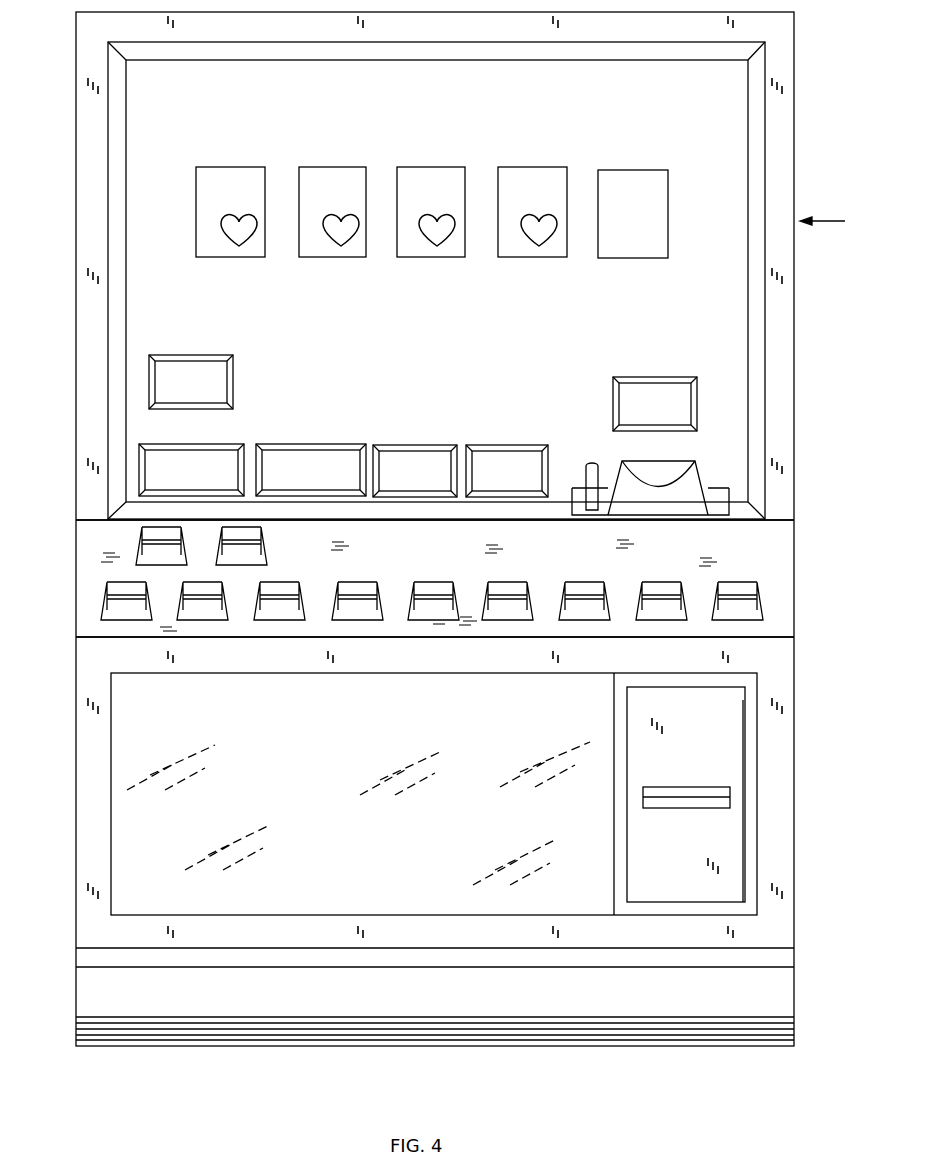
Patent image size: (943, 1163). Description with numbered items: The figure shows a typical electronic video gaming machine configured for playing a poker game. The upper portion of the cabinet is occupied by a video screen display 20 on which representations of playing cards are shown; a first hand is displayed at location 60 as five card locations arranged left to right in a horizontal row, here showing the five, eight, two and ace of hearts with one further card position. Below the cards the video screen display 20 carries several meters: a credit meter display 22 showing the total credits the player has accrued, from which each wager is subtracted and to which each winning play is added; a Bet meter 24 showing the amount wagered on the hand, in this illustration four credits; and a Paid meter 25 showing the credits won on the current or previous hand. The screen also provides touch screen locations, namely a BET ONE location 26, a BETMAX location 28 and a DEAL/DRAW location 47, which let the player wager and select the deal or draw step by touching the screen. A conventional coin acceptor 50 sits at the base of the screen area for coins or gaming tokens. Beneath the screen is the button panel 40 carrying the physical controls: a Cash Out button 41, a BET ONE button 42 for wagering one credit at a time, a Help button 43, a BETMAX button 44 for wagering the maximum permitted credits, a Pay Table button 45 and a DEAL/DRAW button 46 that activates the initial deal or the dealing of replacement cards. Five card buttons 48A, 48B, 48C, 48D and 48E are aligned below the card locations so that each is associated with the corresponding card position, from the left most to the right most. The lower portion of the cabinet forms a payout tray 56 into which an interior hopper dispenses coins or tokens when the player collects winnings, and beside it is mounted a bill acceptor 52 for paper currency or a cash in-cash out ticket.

The video screen display 20 is at (726, 124).
The first hand location 60 is at (162, 190).
The Paid meter 25 is at (213, 377).
The credit meter display 22 is at (157, 462).
The Bet meter 24 is at (347, 460).
The BET ONE location 26 is at (430, 456).
The BETMAX location 28 is at (525, 460).
The DEAL/DRAW location 47 is at (669, 379).
The coin acceptor 50 is at (695, 506).
The button panel 40 is at (88, 558).
The Help button 43 is at (153, 535).
The Pay Table button 45 is at (250, 535).
The Cash Out button 41 is at (110, 613).
The BET ONE button 42 is at (207, 613).
The BETMAX button 44 is at (290, 616).
The card button 48A is at (367, 613).
The card button 48B is at (441, 613).
The card button 48C is at (505, 613).
The card button 48D is at (582, 613).
The card button 48E is at (655, 615).
The DEAL/DRAW button 46 is at (743, 617).
The payout tray 56 is at (434, 794).
The bill acceptor 52 is at (723, 803).